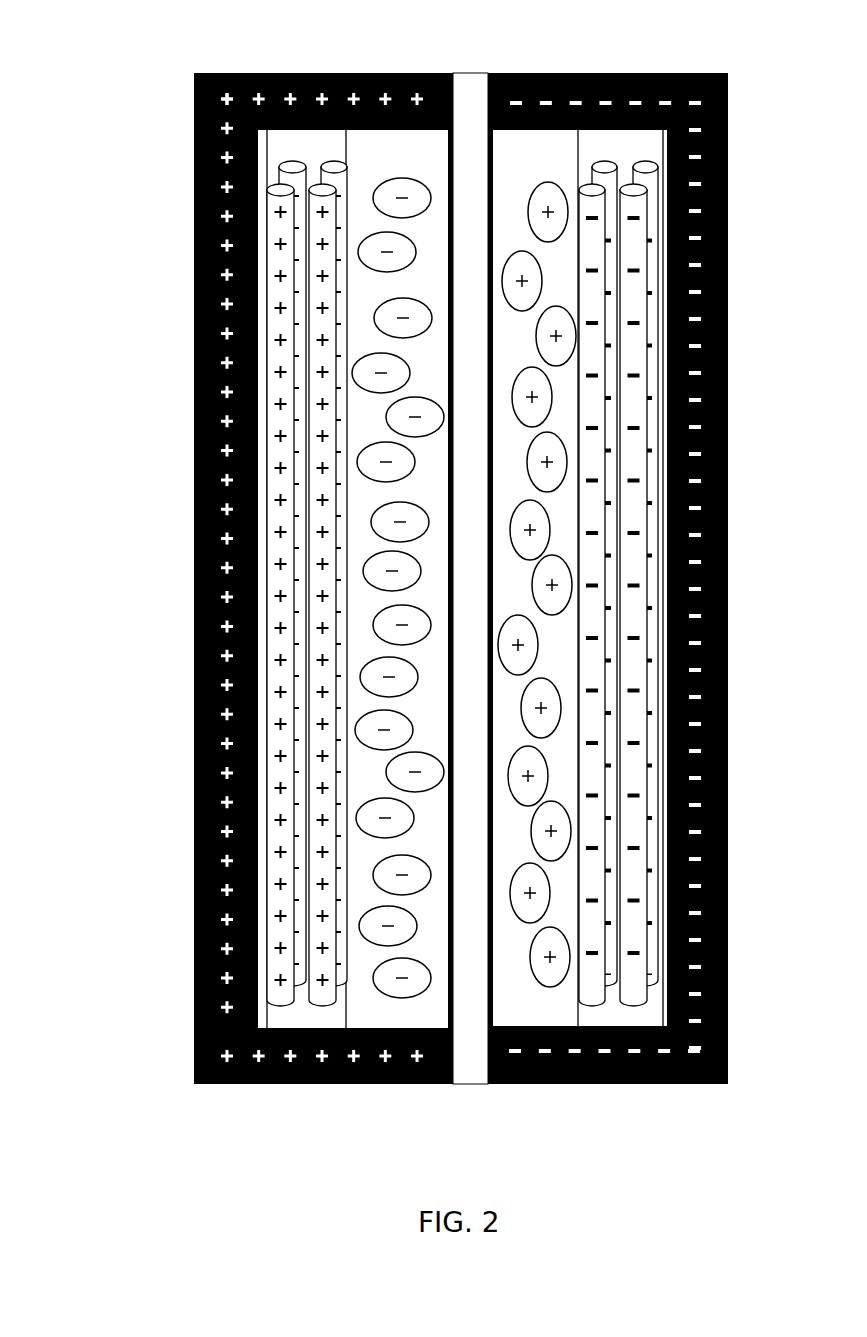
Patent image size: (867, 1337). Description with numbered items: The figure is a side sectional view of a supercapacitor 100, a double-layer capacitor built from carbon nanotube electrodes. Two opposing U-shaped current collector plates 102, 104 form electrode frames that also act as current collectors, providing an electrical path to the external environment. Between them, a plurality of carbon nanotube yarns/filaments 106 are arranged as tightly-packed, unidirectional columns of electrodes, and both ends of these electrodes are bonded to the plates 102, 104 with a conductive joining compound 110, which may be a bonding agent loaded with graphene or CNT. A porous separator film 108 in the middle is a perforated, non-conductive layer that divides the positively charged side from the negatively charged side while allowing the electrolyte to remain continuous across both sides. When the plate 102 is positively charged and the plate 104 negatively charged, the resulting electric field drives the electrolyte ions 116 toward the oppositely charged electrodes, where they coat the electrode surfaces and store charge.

The supercapacitor 100 is at (136, 563).
The current collector plate 102 is at (195, 167).
The current collector plate 104 is at (728, 190).
The carbon nanotube yarns/filaments 106 is at (340, 178).
The porous separator film 108 is at (467, 95).
The conductive joining compound 110 is at (320, 149).
The electrolyte ions 116 is at (405, 190).